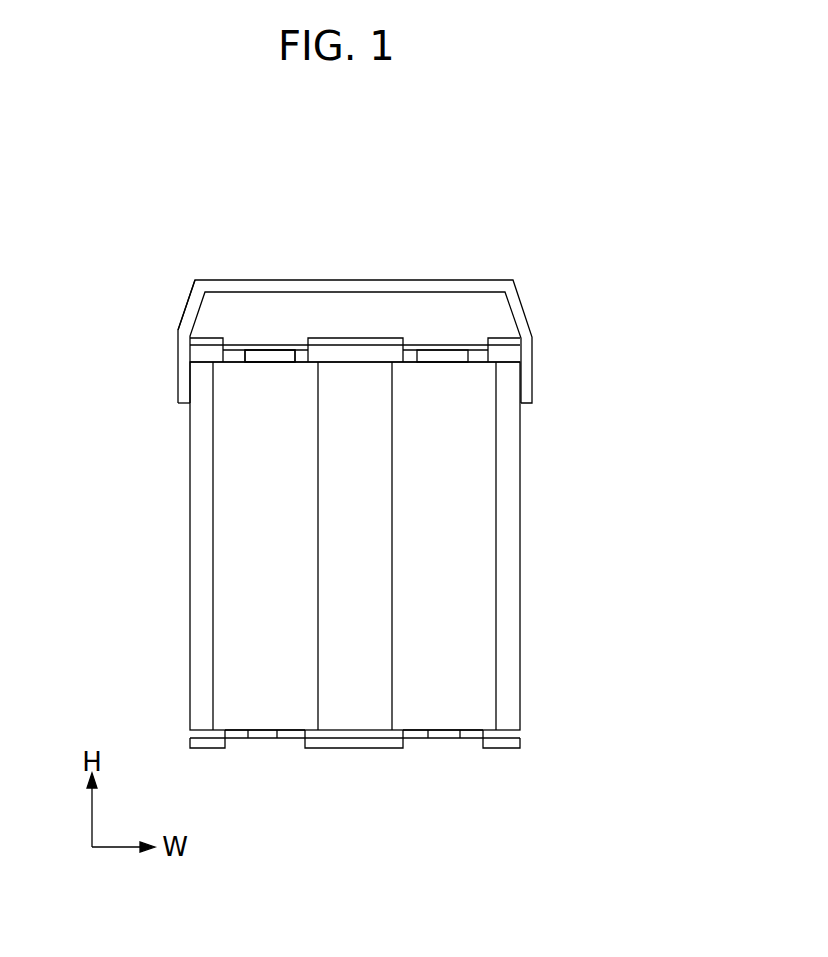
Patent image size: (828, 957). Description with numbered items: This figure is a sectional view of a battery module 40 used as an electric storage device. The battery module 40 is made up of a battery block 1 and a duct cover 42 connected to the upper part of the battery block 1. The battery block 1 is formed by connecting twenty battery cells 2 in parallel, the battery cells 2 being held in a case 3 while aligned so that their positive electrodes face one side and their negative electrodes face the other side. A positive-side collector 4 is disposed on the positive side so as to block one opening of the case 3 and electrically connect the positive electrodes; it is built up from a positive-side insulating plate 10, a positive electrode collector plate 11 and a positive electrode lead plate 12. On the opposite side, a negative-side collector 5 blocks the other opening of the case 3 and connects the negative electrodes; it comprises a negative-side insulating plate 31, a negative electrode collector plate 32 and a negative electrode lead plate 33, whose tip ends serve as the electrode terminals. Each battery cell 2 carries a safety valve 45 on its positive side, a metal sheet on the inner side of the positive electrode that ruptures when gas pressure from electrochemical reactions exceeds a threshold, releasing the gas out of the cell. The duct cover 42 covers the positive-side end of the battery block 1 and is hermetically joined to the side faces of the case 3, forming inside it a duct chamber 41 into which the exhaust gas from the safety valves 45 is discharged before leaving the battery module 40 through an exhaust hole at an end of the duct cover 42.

The battery module 40 is at (530, 227).
The duct chamber 41 is at (254, 312).
The duct cover 42 is at (186, 308).
The safety valve 45 is at (267, 362).
The positive-side collector 4 is at (595, 290).
The positive-side insulating plate 10 is at (510, 353).
The positive electrode collector plate 11 is at (475, 344).
The positive electrode lead plate 12 is at (522, 340).
The battery block 1 is at (520, 495).
The battery cell 2 is at (232, 648).
The case 3 is at (202, 515).
The negative-side collector 5 is at (595, 730).
The negative-side insulating plate 31 is at (517, 733).
The negative electrode lead plate 33 is at (513, 750).
The negative electrode collector plate 32 is at (470, 740).